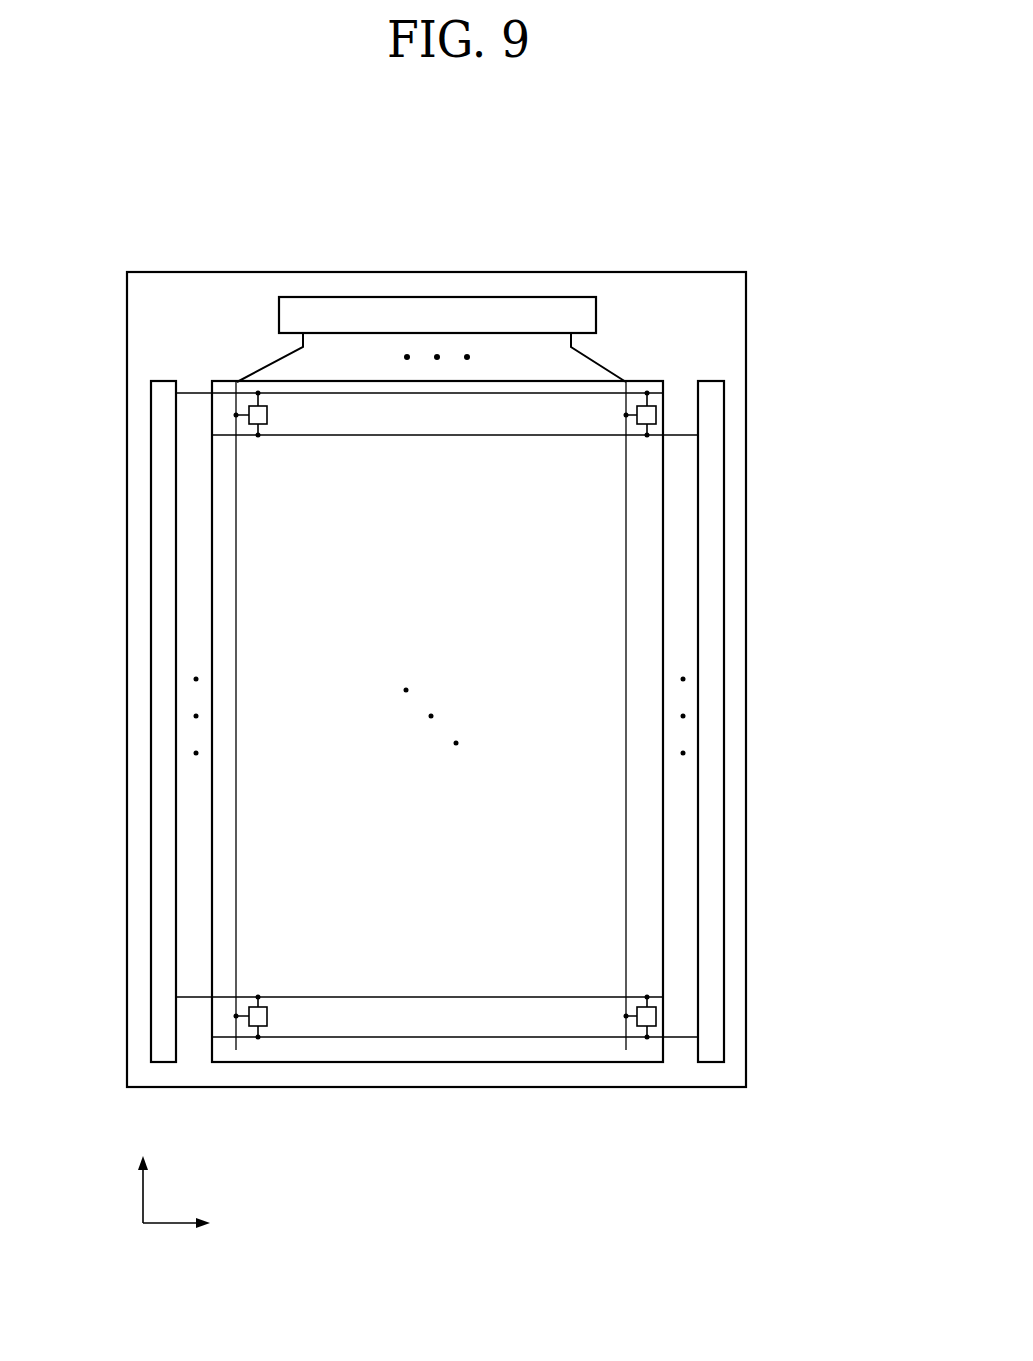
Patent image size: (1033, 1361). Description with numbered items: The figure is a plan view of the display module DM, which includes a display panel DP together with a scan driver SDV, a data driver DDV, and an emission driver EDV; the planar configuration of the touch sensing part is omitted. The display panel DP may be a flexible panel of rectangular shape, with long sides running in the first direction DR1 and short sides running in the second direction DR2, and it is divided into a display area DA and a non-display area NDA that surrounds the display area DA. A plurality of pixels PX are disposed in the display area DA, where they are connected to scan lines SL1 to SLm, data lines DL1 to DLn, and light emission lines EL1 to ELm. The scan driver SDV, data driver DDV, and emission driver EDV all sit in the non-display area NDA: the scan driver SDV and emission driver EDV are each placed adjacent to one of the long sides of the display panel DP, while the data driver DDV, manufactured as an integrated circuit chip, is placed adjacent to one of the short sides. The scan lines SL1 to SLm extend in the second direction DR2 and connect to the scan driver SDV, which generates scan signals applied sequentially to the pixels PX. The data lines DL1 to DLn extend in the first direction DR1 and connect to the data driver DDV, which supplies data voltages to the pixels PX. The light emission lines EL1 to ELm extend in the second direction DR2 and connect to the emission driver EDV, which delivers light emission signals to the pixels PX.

The display module DM is at (693, 226).
The display panel DP is at (748, 455).
The display area DA is at (650, 792).
The non-display area NDA is at (685, 873).
The data driver DDV is at (508, 307).
The scan driver SDV is at (158, 620).
The emission driver EDV is at (713, 619).
The pixel PX is at (268, 414).
The first scan line SL1 is at (458, 395).
The m-th scan line SLm is at (427, 997).
The first light emission line EL1 is at (500, 437).
The m-th light emission line ELm is at (507, 1037).
The first data line DL1 is at (238, 716).
The n-th data line DLn is at (626, 716).
The first direction DR1 is at (143, 1176).
The second direction DR2 is at (198, 1224).